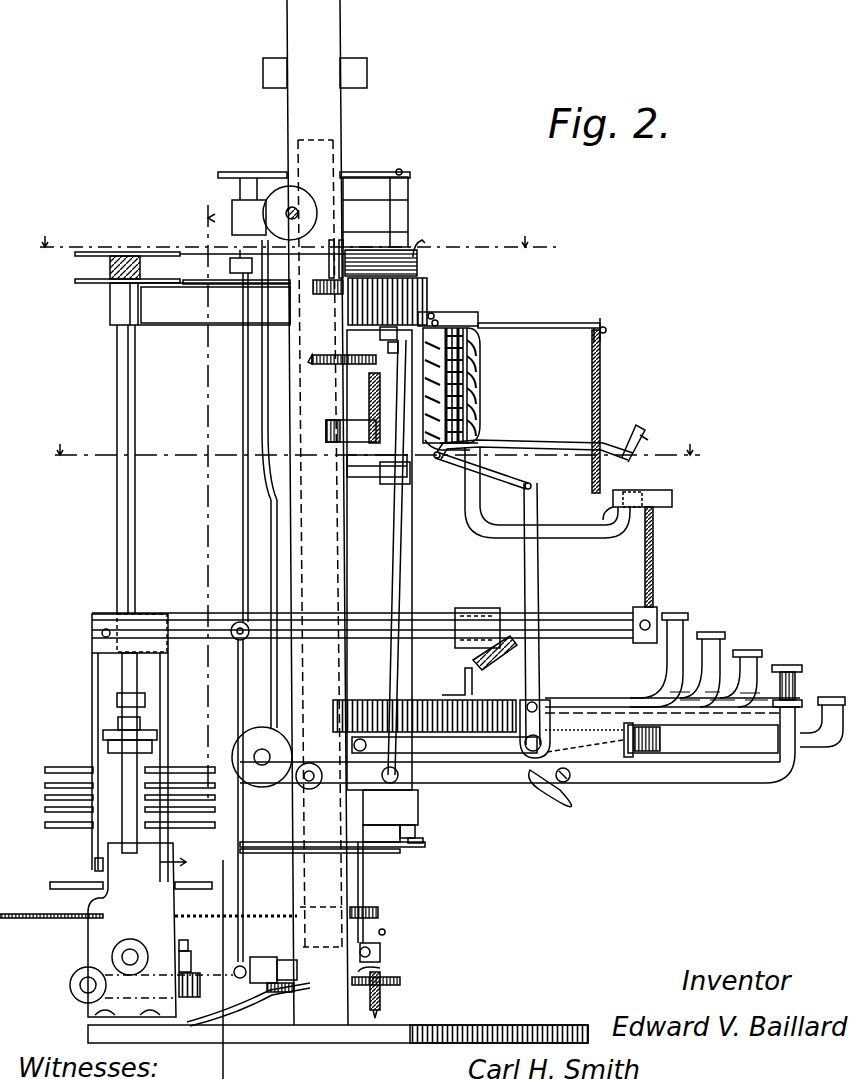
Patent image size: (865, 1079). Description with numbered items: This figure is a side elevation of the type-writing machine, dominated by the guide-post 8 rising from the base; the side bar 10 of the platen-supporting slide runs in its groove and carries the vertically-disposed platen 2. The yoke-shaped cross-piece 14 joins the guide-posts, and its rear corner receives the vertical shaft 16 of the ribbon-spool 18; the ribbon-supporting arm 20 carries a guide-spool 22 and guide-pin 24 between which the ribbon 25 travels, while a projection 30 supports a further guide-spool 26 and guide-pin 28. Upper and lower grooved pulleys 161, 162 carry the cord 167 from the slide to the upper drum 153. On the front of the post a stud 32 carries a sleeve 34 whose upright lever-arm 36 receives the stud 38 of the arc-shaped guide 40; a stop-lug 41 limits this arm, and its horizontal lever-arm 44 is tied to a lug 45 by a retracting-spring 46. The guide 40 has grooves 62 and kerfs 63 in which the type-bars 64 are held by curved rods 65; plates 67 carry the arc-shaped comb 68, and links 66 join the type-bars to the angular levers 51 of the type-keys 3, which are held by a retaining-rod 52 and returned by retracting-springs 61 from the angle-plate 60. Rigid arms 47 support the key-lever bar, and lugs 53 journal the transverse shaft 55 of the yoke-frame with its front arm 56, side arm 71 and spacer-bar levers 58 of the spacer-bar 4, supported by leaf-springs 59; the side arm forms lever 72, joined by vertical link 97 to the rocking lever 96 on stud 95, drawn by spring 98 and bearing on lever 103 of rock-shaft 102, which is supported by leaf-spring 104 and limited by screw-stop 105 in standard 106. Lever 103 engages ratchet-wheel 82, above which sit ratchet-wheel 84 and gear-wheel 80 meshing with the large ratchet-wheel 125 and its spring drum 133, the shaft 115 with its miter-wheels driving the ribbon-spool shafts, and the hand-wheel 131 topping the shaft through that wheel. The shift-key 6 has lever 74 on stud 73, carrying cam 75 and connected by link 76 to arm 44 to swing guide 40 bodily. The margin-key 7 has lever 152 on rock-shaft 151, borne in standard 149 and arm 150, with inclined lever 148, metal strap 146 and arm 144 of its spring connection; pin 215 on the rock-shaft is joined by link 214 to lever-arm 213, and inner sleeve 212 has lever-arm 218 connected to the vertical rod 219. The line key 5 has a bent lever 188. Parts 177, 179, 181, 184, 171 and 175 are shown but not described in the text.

The guide-post 8 is at (317, 512).
The bracket 179 is at (366, 77).
The plate 177 is at (270, 172).
The upper grooved pulley 161 is at (282, 205).
The block 181 is at (380, 509).
The guide-spool 22 is at (415, 252).
The guide-pin 28 is at (329, 248).
The guide-spool 26 is at (344, 255).
The guide-pin 24 is at (418, 258).
The ribbon-supporting arm 20 is at (427, 293).
The projection 30 is at (322, 294).
The ribbon-spool 18 is at (118, 252).
The ribbon 25 is at (185, 264).
The yoke-shaped cross-piece 14 is at (182, 302).
The vertical shaft 16 is at (117, 365).
The platen-raising or line key 5 is at (608, 506).
The side bar 10 is at (380, 461).
The spacer-bar 4 is at (832, 697).
The vertical rod 219 is at (262, 466).
The platen 2 is at (243, 520).
The lug 45 is at (320, 356).
The retracting-spring 46 is at (365, 408).
The stop-lug 41 is at (351, 431).
The stud 38 is at (380, 332).
The lever-arm 36 is at (387, 358).
The sleeve 34 is at (379, 560).
The stud 32 is at (347, 465).
The horizontal lever-arm 44 is at (408, 478).
The link 76 is at (386, 580).
The frame 184 is at (410, 572).
The longitudinal groove 62 is at (450, 326).
The arc-shaped guide 40 is at (480, 345).
The transverse kerf 63 is at (475, 402).
The curved rod 65 is at (480, 428).
The plate 67 is at (542, 330).
The arc-shaped comb 68 is at (600, 414).
The type-bar 64 is at (548, 438).
The link 66 is at (482, 470).
The bent lever 188 is at (465, 496).
The margin-key 7 is at (463, 1025).
The lever 152 is at (656, 566).
The rock-shaft 151 is at (575, 618).
The arm 150 is at (460, 608).
The angular lever 51 is at (540, 578).
The retaining-rod 52 is at (540, 706).
The lug 53 is at (598, 689).
The transverse shaft 55 is at (531, 729).
The front transverse arm 56 is at (628, 723).
The spacer-bar lever 58 is at (703, 739).
The side arm 71 is at (585, 741).
The angle-plate 60 is at (462, 683).
The retracting-spring 61 is at (722, 690).
The rigid arm 47 is at (500, 725).
The lever 72 is at (444, 745).
The lever 74 is at (517, 768).
The stud 73 is at (308, 763).
The lower grooved pulley 162 is at (257, 742).
The cord 167 is at (270, 583).
The pin 215 is at (232, 640).
The hand-wheel 131 is at (105, 685).
The standard 149 is at (166, 719).
The inclined lever 148 is at (100, 745).
The upper drum 153 is at (45, 806).
The metal strap 146 is at (95, 862).
The arm 144 is at (176, 858).
The link 214 is at (236, 874).
The drum or housing 133 is at (50, 888).
The large ratchet-wheel 125 is at (55, 920).
The shaft 115 is at (130, 947).
The rock-shaft 102 is at (72, 986).
The screw-stop 105 is at (195, 936).
The standard 106 is at (192, 968).
The lever 103 is at (206, 983).
The leaf-spring 104 is at (248, 1004).
The outer lever-arm 213 is at (255, 957).
The inner sleeve 212 is at (295, 965).
The outer lever-arm 218 is at (275, 992).
The vertical link 97 is at (364, 887).
The gear-wheel 80 is at (379, 912).
The rocking lever 96 is at (380, 929).
The stud 95 is at (381, 950).
The smaller ratchet-wheel 84 is at (377, 964).
The ratchet-wheel 82 is at (400, 979).
The spring 98 is at (380, 1002).
The plate 171 is at (380, 848).
The block 175 is at (422, 845).
The leaf-spring 59 is at (562, 782).
The cam 75 is at (556, 776).
The type-key 3 is at (670, 618).
The shift-key 6 is at (795, 695).